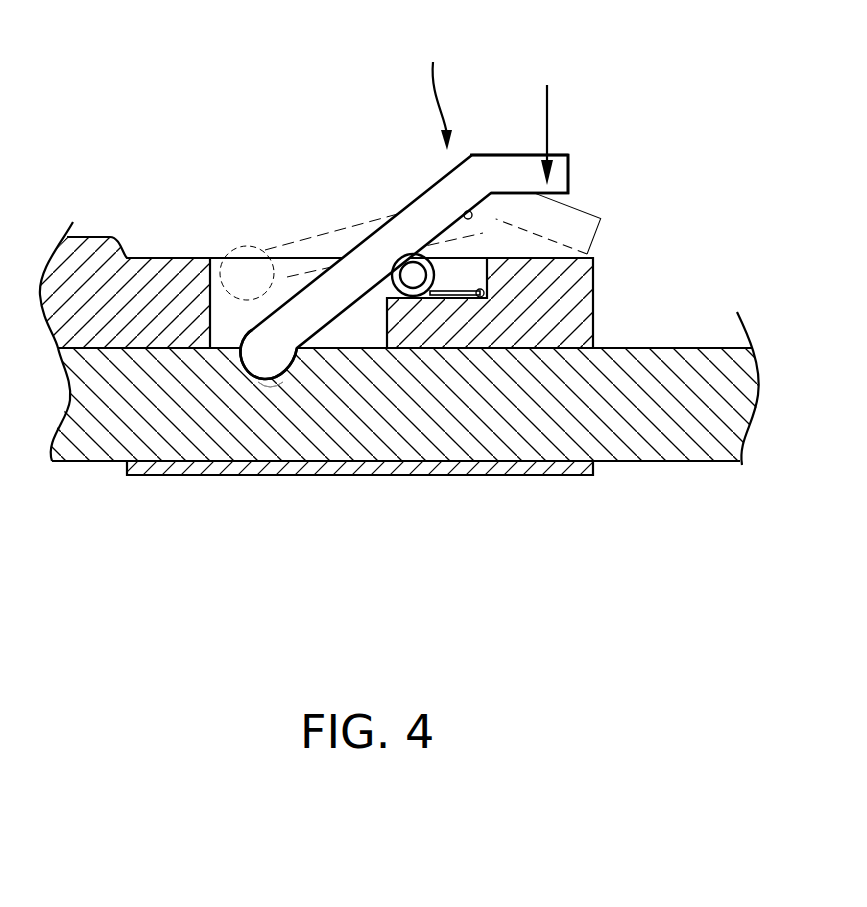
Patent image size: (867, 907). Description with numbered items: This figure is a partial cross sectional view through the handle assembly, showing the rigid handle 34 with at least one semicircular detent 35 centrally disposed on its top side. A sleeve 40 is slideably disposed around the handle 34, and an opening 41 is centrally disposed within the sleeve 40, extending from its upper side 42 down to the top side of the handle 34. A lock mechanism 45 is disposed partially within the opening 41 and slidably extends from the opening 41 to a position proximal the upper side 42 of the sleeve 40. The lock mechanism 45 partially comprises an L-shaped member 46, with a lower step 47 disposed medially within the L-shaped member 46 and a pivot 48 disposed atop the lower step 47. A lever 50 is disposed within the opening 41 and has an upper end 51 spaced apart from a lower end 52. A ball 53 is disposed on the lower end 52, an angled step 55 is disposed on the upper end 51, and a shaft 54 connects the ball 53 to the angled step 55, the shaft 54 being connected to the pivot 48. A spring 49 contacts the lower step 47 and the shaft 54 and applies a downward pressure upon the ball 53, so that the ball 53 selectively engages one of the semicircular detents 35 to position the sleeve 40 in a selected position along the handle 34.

The handle 34 is at (720, 348).
The semicircular detent 35 is at (265, 370).
The sleeve 40 is at (545, 476).
The opening 41 is at (210, 245).
The upper side 42 is at (533, 256).
The lock mechanism 45 is at (432, 86).
The L-shaped member 46 is at (590, 285).
The lower step 47 is at (450, 298).
The pivot 48 is at (413, 275).
The spring 49 is at (472, 218).
The lever 50 is at (470, 155).
The upper end 51 is at (605, 173).
The lower end 52 is at (275, 405).
The ball 53 is at (252, 328).
The shaft 54 is at (355, 249).
The angled step 55 is at (562, 153).